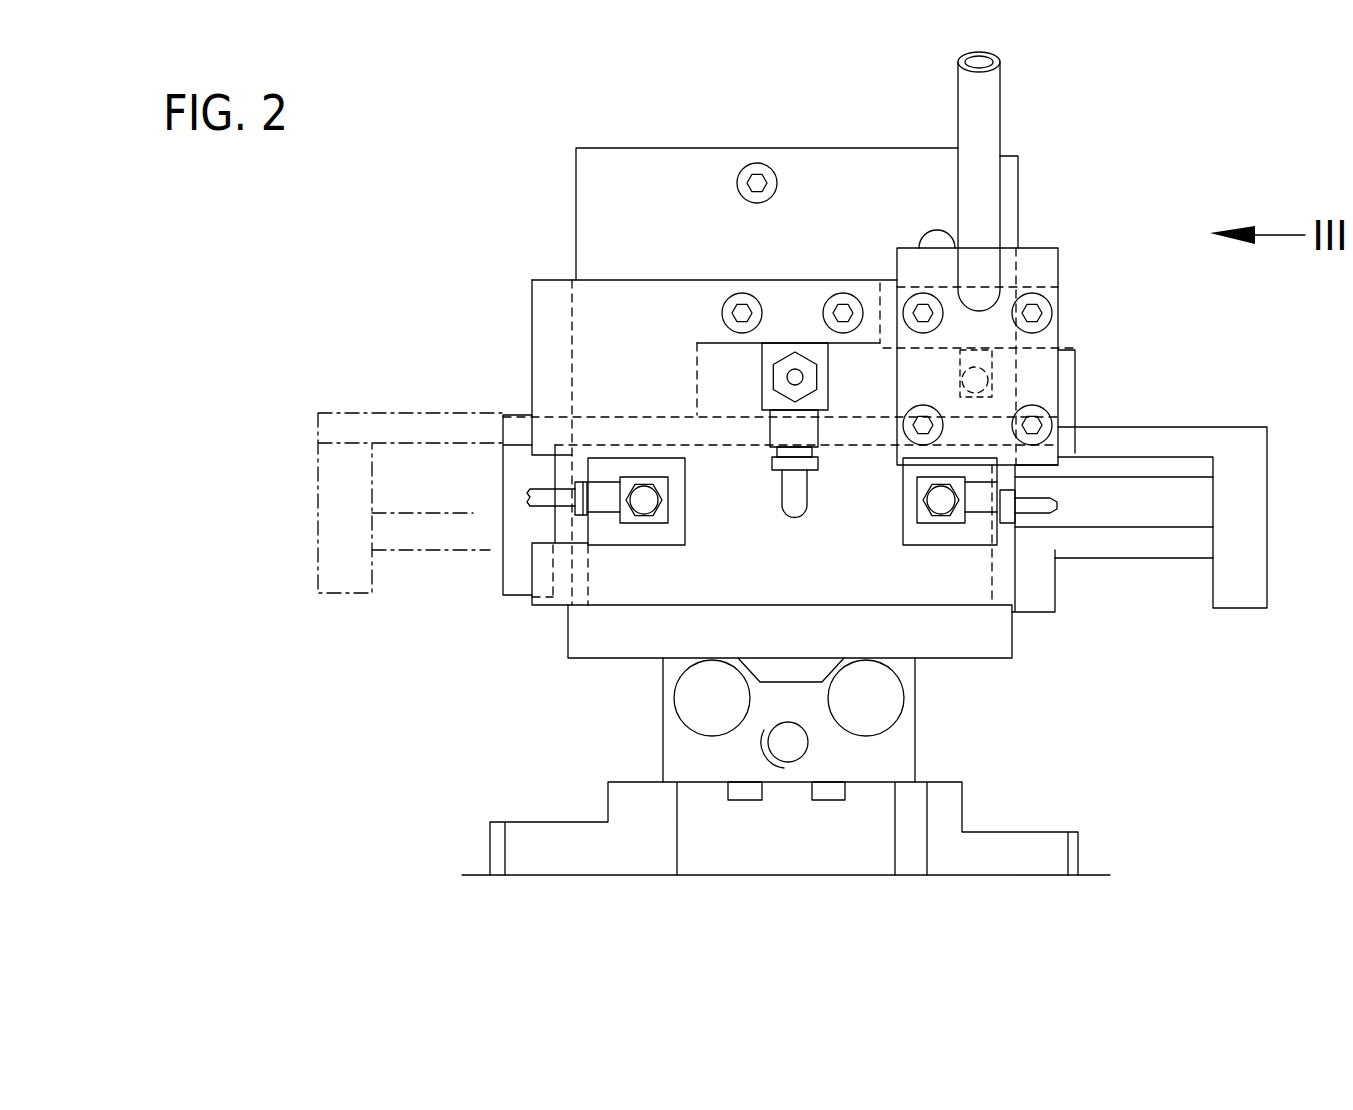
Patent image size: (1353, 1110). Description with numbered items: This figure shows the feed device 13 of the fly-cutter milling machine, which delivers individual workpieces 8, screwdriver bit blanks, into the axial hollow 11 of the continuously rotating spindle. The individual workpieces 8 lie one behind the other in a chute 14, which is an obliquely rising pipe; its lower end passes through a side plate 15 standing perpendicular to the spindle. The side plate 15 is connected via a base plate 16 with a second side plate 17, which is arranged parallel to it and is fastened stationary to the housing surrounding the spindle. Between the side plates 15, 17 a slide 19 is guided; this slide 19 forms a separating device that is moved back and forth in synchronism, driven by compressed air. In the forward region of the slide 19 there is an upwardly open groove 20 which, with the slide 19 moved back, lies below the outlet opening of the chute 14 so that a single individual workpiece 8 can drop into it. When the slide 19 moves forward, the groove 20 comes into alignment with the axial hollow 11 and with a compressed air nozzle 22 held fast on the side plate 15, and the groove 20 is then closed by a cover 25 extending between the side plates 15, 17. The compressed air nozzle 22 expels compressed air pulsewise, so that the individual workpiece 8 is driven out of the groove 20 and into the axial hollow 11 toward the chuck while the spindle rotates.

The individual workpiece 8 is at (995, 340).
The axial hollow 11 is at (762, 372).
The feed device 13 is at (1073, 187).
The chute 14 is at (982, 130).
The side plate 15 is at (650, 297).
The base plate 16 is at (987, 638).
The side plate 17 is at (847, 187).
The slide 19 is at (345, 422).
The groove 20 is at (975, 375).
The compressed air nozzle 22 is at (787, 392).
The cover 25 is at (698, 343).